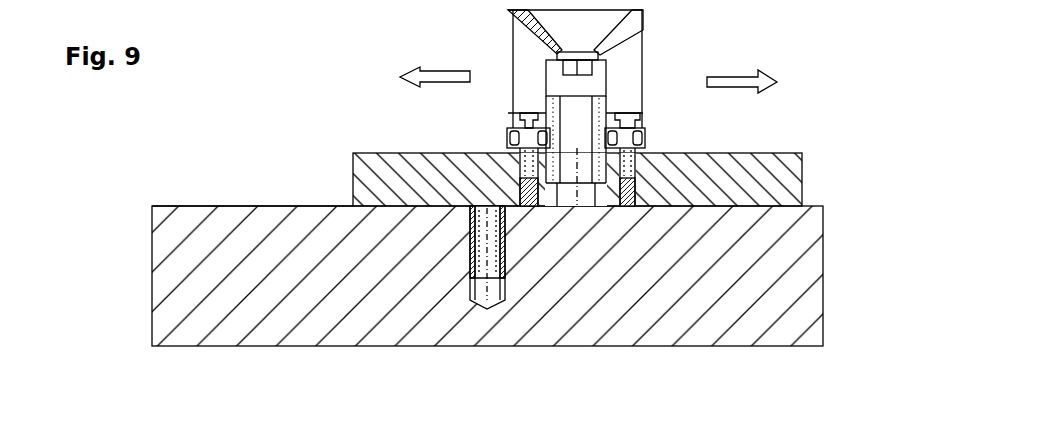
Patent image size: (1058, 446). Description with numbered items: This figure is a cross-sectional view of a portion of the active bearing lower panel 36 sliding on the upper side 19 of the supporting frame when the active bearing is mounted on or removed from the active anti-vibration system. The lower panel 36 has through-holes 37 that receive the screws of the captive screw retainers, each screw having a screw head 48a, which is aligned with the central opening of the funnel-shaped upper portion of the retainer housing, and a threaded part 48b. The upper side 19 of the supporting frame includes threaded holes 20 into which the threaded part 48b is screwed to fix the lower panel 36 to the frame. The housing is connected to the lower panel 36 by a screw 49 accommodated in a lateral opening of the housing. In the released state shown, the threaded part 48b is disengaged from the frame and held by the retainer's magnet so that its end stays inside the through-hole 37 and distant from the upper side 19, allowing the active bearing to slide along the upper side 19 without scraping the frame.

The upper side 19 is at (232, 205).
The threaded holes 20 is at (795, 282).
The active bearing lower panel 36 is at (773, 173).
The through-holes 37 is at (470, 253).
The screw head 48a is at (582, 88).
The threaded part 48b is at (572, 128).
The screw 49 is at (628, 145).